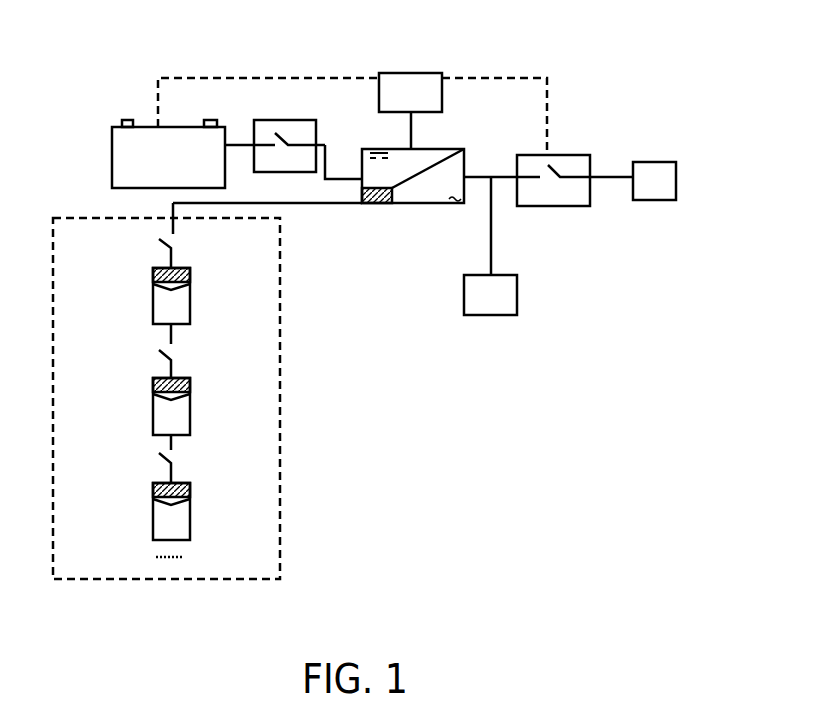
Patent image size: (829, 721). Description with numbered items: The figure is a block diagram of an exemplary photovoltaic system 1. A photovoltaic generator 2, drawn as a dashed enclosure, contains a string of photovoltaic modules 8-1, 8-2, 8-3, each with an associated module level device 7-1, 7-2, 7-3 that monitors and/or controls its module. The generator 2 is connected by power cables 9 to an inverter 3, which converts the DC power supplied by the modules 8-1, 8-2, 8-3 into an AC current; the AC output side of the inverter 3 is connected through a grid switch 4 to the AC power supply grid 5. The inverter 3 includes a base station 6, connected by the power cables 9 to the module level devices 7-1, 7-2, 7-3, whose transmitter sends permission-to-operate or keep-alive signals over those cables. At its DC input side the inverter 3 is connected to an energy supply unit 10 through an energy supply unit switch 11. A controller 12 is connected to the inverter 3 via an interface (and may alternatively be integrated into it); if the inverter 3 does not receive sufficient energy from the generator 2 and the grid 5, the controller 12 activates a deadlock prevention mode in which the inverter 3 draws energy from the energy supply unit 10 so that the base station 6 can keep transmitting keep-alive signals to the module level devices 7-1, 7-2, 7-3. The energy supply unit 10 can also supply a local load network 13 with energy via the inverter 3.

The photovoltaic system 1 is at (395, 398).
The photovoltaic generator 2 is at (176, 580).
The inverter 3 is at (432, 205).
The grid switch 4 is at (553, 206).
The AC power supply grid 5 is at (676, 181).
The base station 6 is at (377, 205).
The module level device 7-1 is at (190, 275).
The module level device 7-2 is at (190, 385).
The module level device 7-3 is at (190, 490).
The photovoltaic module 8-1 is at (190, 310).
The photovoltaic module 8-2 is at (190, 420).
The photovoltaic module 8-3 is at (190, 522).
The power cables 9 is at (318, 205).
The energy supply unit 10 is at (112, 157).
The energy supply unit switch 11 is at (286, 120).
The controller 12 is at (411, 73).
The local load network 13 is at (490, 315).